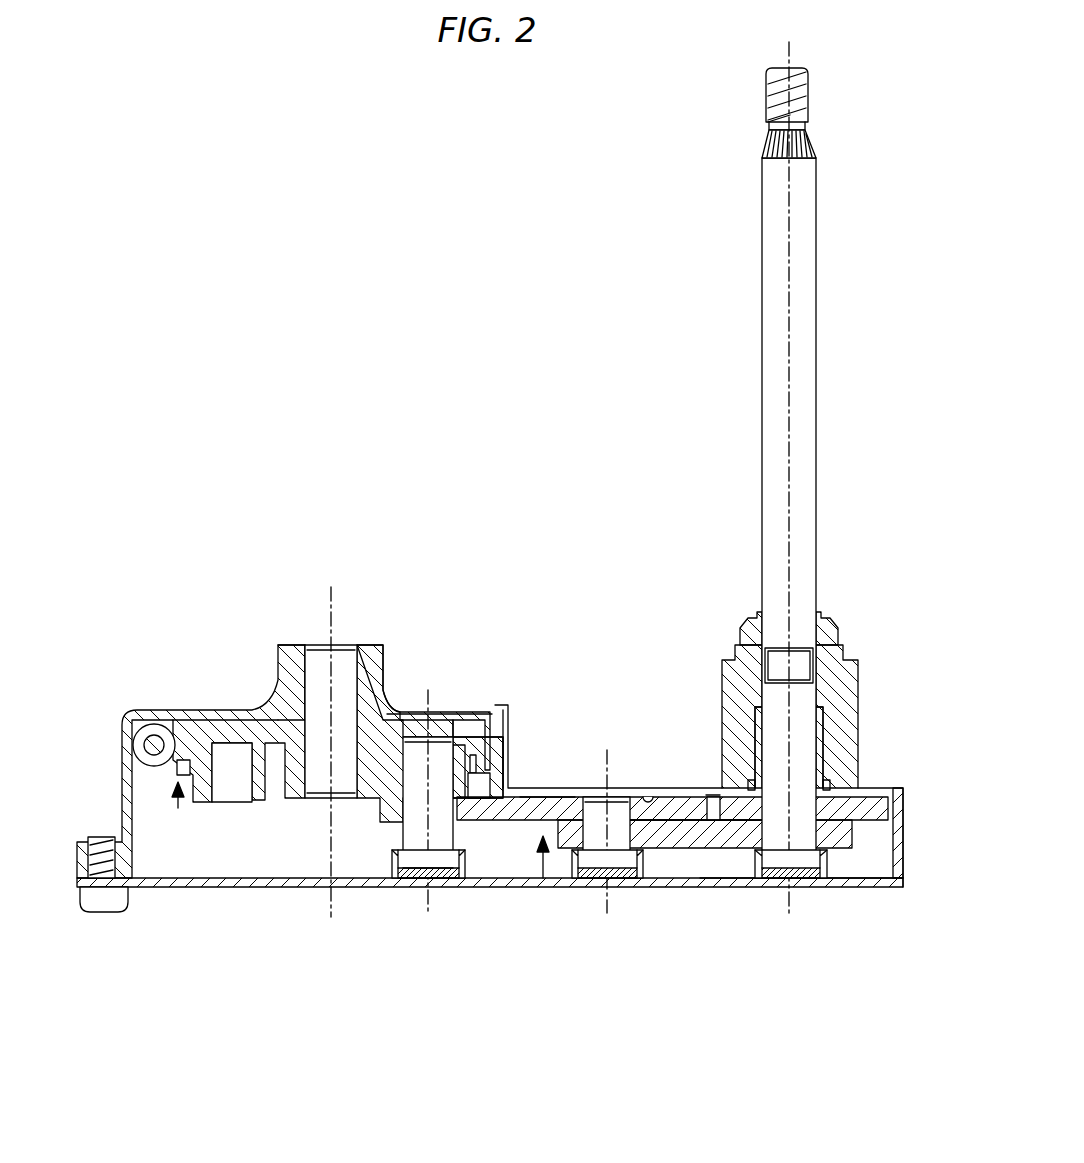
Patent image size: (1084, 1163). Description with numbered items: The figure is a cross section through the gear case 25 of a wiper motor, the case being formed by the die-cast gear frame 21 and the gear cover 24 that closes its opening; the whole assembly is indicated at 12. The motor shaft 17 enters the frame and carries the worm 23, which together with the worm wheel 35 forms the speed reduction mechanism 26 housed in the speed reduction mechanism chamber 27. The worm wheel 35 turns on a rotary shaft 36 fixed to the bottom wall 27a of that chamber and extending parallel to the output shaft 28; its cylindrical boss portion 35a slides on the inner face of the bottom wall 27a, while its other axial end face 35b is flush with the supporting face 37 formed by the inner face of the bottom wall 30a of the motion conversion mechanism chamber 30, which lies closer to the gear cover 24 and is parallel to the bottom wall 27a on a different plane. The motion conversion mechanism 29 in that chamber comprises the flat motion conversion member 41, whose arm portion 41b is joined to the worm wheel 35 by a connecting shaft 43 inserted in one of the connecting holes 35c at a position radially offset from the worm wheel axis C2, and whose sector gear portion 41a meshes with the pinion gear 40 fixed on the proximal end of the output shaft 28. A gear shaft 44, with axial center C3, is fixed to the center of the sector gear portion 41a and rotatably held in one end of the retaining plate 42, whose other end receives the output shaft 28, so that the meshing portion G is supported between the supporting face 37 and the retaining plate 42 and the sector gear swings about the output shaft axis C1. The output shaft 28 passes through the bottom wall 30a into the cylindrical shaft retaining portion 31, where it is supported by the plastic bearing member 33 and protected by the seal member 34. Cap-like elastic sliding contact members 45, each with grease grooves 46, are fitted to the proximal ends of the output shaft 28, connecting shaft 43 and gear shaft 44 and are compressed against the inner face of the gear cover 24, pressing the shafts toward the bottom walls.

The drive device 12 is at (597, 440).
The motor shaft 17 is at (140, 722).
The gear frame 21 is at (503, 692).
The worm 23 is at (165, 737).
The gear cover 24 is at (520, 797).
The gear case 25 is at (572, 600).
The speed reduction mechanism 26 is at (178, 808).
The speed reduction mechanism chamber 27 is at (462, 760).
The bottom wall of speed reduction mechanism chamber 27a is at (418, 735).
The output shaft 28 is at (800, 437).
The motion conversion mechanism 29 is at (543, 878).
The motion conversion mechanism chamber 30 is at (878, 840).
The bottom wall of motion conversion mechanism chamber 30a is at (647, 798).
The shaft retaining portion 31 is at (840, 697).
The bearing member 33 is at (825, 750).
The seal member 34 is at (842, 630).
The worm wheel 35 is at (211, 710).
The boss portion 35a is at (290, 712).
The other axial end face of worm wheel 35b is at (232, 804).
The connecting holes 35c is at (440, 762).
The rotary shaft 36 is at (345, 665).
The supporting face 37 is at (663, 812).
The pinion gear 40 is at (852, 852).
The motion conversion member 41 is at (580, 785).
The sector gear portion 41a is at (685, 812).
The arm portion 41b is at (555, 812).
The retaining plate 42 is at (695, 850).
The connecting shaft 43 is at (440, 870).
The gear shaft 44 is at (610, 872).
The sliding contact members 45 is at (425, 880).
The grease grooves 46 is at (395, 864).
The axial center of output shaft C1 is at (790, 268).
The axial center of worm wheel C2 is at (331, 600).
The axial center of gear shaft C3 is at (607, 750).
The meshing portion G is at (711, 778).